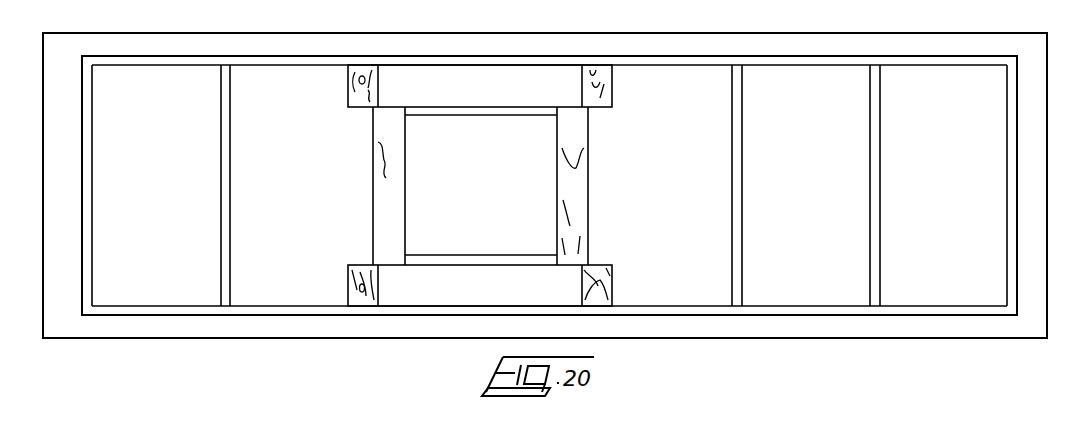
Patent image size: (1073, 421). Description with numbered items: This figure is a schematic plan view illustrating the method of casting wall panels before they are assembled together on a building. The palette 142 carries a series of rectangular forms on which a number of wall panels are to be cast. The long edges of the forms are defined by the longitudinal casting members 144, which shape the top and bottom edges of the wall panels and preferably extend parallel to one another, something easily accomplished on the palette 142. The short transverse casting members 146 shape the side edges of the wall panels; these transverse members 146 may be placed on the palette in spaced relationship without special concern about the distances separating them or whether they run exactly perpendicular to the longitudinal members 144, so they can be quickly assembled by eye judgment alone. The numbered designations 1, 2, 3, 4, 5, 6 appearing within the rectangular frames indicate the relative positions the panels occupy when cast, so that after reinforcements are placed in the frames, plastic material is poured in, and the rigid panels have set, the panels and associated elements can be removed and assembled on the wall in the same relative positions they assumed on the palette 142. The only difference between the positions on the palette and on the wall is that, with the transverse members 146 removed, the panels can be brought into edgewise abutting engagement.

The palette 142 is at (200, 43).
The longitudinal casting member 144 is at (880, 60).
The short transverse casting member 146 is at (222, 238).
The numbered designation 1 is at (158, 177).
The numbered designation 2 is at (295, 177).
The numbered designation 3 is at (490, 93).
The numbered designation 4 is at (671, 177).
The numbered designation 5 is at (810, 177).
The numbered designation 6 is at (946, 177).